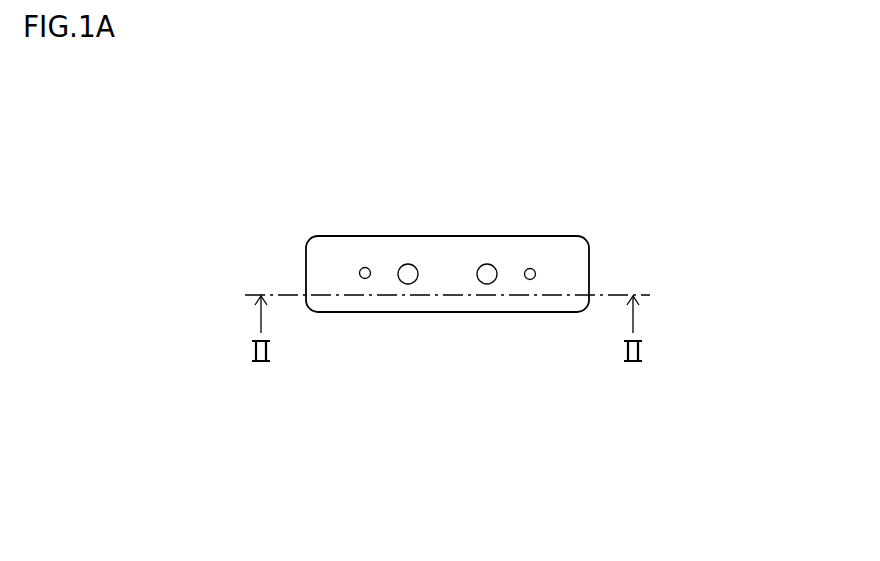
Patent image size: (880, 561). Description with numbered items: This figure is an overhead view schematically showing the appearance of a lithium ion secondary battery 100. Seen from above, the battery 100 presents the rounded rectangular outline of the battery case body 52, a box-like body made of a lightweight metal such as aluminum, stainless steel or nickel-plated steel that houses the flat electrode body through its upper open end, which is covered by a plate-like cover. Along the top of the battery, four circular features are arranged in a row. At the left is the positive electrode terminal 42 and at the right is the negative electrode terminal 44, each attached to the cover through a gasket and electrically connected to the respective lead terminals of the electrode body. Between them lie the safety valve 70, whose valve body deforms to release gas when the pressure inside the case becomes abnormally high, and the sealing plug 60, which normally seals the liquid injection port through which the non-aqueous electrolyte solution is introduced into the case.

The lithium ion secondary battery 100 is at (660, 227).
The battery case body 52 is at (447, 242).
The positive electrode terminal 42 is at (362, 267).
The safety valve 70 is at (405, 265).
The sealing plug 60 is at (487, 265).
The negative electrode terminal 44 is at (532, 265).